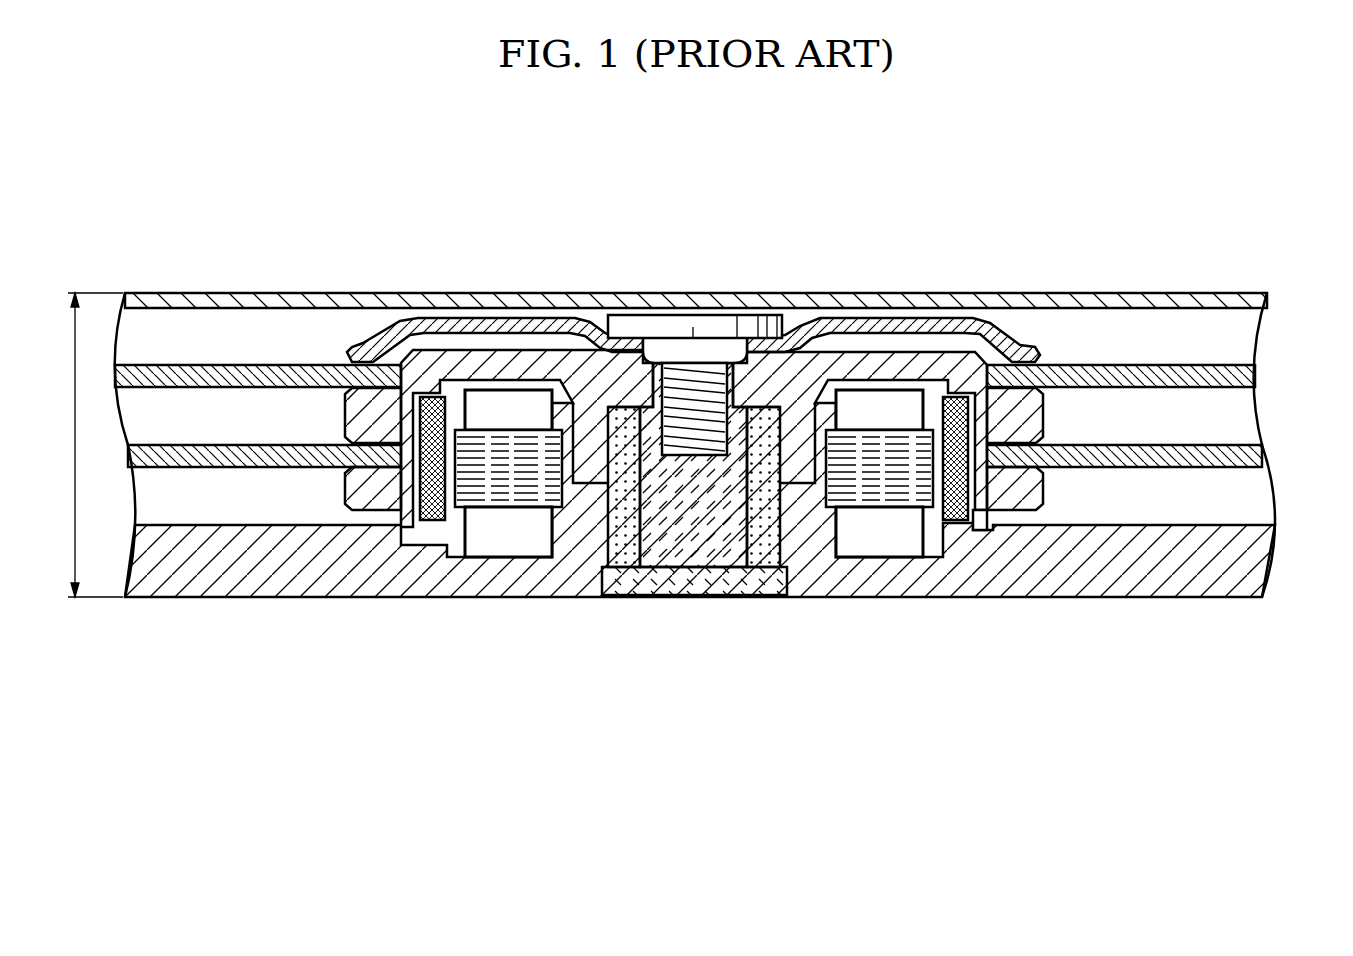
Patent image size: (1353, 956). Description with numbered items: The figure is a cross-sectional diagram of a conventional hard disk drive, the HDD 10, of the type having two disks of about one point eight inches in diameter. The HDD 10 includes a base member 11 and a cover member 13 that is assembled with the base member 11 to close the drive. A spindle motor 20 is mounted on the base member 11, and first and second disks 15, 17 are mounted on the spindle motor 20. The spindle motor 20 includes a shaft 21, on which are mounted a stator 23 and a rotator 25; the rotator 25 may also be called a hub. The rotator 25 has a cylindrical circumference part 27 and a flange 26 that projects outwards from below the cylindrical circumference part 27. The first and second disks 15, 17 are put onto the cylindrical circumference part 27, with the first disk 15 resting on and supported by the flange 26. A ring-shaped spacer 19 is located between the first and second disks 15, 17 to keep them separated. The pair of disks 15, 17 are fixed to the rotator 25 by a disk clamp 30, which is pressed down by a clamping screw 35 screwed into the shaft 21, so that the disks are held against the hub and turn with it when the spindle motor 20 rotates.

The HDD 10 is at (275, 200).
The base member 11 is at (1149, 582).
The cover member 13 is at (350, 303).
The first disk 15 is at (1255, 457).
The second disk 17 is at (1245, 380).
The ring-shaped spacer 19 is at (350, 443).
The spindle motor 20 is at (698, 539).
The shaft 21 is at (722, 545).
The stator 23 is at (503, 530).
The rotator 25 is at (893, 367).
The flange 26 is at (363, 500).
The cylindrical circumference part 27 is at (394, 312).
The disk clamp 30 is at (918, 325).
The clamping screw 35 is at (652, 326).